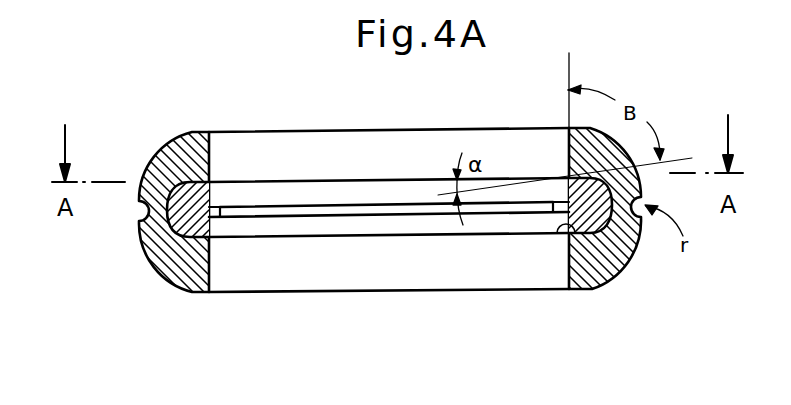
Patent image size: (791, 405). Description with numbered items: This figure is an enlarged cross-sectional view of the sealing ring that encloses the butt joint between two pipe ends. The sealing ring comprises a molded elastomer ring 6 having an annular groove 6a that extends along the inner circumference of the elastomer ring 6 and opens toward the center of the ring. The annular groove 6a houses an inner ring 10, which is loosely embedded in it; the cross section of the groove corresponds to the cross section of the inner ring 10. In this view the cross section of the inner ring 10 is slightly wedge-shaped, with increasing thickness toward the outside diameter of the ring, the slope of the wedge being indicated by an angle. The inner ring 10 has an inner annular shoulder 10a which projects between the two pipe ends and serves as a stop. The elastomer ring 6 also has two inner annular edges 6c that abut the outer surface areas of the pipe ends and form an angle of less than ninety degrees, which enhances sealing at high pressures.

The molded elastomer ring 6 is at (605, 276).
The annular groove 6a is at (568, 222).
The inner annular edges 6c is at (247, 182).
The inner ring 10 is at (172, 226).
The inner annular shoulder 10a is at (215, 215).